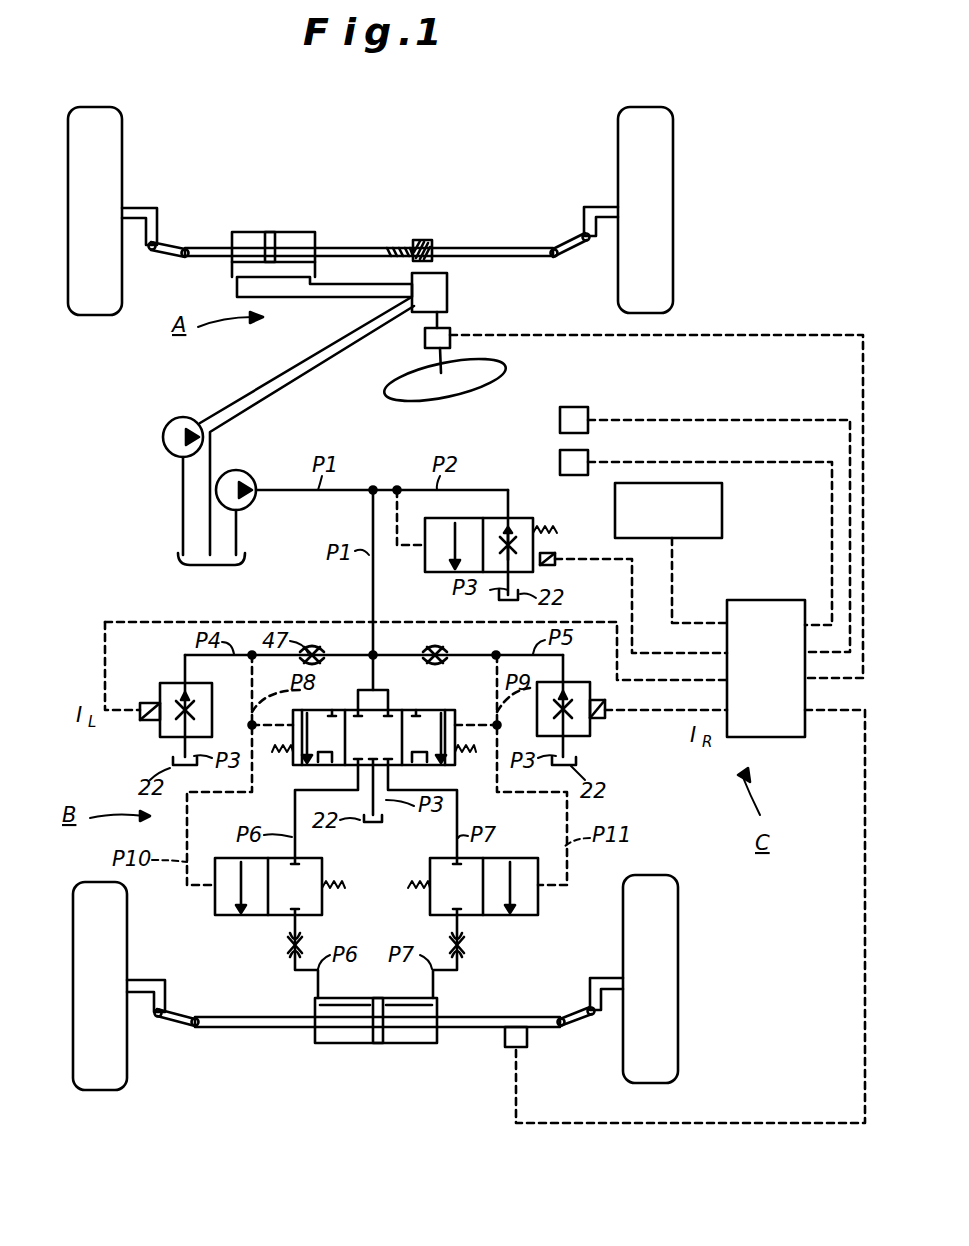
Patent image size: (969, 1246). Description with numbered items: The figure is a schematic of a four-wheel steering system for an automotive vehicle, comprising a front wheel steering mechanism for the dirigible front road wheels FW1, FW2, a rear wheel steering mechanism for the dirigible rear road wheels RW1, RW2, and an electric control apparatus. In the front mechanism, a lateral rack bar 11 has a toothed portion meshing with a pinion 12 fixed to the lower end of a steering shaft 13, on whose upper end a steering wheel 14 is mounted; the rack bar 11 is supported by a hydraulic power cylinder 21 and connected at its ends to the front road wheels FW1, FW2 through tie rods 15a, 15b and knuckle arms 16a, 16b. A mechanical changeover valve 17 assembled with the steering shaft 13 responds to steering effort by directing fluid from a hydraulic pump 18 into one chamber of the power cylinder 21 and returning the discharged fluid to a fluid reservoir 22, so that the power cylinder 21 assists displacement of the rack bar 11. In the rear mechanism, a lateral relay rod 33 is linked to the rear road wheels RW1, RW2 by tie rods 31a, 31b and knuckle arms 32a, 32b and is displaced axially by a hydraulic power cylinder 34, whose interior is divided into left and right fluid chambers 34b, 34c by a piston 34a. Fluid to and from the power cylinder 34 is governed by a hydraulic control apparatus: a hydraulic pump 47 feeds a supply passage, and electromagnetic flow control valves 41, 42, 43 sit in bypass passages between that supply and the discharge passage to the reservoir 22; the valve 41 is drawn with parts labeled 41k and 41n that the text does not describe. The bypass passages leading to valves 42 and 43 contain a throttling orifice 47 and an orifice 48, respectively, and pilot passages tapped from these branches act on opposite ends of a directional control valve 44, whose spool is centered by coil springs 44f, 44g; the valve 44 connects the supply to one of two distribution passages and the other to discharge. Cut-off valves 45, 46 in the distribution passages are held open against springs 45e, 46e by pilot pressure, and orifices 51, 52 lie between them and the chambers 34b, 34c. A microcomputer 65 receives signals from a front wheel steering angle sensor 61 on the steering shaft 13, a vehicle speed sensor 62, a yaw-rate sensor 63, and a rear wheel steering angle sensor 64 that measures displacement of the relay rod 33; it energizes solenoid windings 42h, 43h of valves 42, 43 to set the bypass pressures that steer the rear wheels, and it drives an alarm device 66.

The front road wheel FW1 is at (102, 105).
The front road wheel FW2 is at (645, 105).
The rear road wheel RW1 is at (102, 1092).
The rear road wheel RW2 is at (656, 1084).
The lateral rack bar 11 is at (362, 247).
The pinion 12 is at (420, 240).
The steering shaft 13 is at (442, 317).
The steering wheel 14 is at (392, 388).
The tie rod 15a is at (183, 244).
The tie rod 15b is at (569, 238).
The knuckle arm 16a is at (145, 206).
The knuckle arm 16b is at (590, 205).
The mechanical changeover valve 17 is at (447, 276).
The hydraulic pump 18 is at (178, 420).
The hydraulic power cylinder 21 is at (269, 232).
The fluid reservoir 22 is at (177, 562).
The tie rod 31a is at (182, 1009).
The tie rod 31b is at (573, 1006).
The knuckle arm 32a is at (144, 978).
The knuckle arm 32b is at (600, 978).
The lateral relay rod 33 is at (260, 1028).
The hydraulic power cylinder 34 is at (364, 1044).
The piston 34a is at (378, 1044).
The left fluid chamber 34b is at (341, 1038).
The right fluid chamber 34c is at (426, 1042).
The electromagnetic flow control valve 41 is at (432, 576).
The spring 41k is at (549, 524).
The solenoid 41n is at (558, 566).
The electromagnetic flow control valve 42 is at (171, 743).
The solenoid winding 42h is at (141, 702).
The electromagnetic flow control valve 43 is at (590, 742).
The solenoid winding 43h is at (610, 721).
The directional control valve 44 is at (448, 710).
The coil spring 44f is at (277, 760).
The coil spring 44g is at (476, 762).
The cut-off valve 45 is at (314, 860).
The coil spring 45e is at (340, 893).
The cut-off valve 46 is at (518, 858).
The spring 46e is at (410, 884).
The hydraulic pump 47 is at (235, 482).
The orifice 48 is at (442, 652).
The orifice 51 is at (287, 948).
The orifice 52 is at (462, 948).
The front wheel steering angle sensor 61 is at (425, 345).
The vehicle speed sensor 62 is at (560, 421).
The yaw-rate sensor 63 is at (560, 463).
The rear wheel steering angle sensor 64 is at (529, 1046).
The microcomputer 65 is at (765, 737).
The alarm device 66 is at (722, 508).